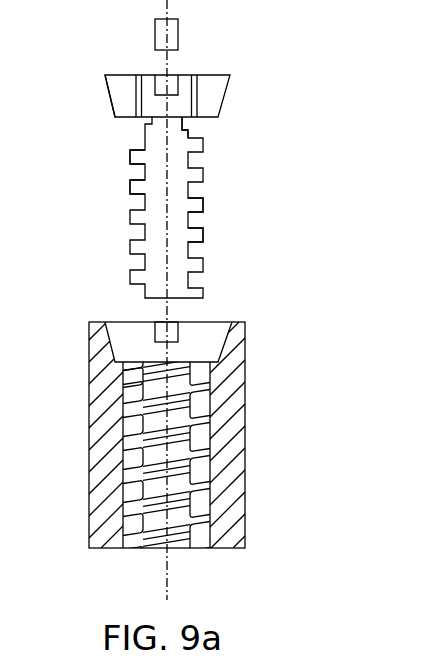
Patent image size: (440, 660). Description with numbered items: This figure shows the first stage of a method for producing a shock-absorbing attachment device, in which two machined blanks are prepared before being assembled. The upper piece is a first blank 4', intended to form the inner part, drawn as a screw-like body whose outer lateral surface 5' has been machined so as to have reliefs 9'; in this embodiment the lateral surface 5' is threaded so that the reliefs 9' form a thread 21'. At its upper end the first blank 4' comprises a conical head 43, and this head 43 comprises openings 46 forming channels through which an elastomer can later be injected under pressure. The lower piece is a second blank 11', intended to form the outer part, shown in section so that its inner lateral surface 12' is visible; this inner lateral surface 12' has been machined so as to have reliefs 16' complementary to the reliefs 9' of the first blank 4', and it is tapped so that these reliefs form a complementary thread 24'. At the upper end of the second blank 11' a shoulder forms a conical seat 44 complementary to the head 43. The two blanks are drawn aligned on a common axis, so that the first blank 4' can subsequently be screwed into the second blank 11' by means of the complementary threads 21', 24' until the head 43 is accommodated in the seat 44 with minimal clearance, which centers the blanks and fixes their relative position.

The first blank 4' is at (183, 59).
The conical head 43 is at (105, 88).
The openings 46 is at (139, 77).
The outer lateral surface 5' is at (139, 207).
The thread 21' is at (234, 121).
The reliefs 9' is at (166, 187).
The second blank 11' is at (220, 418).
The conical seat 44 is at (119, 361).
The inner lateral surface 12' is at (166, 486).
The reliefs 16' is at (171, 446).
The complementary thread 24' is at (89, 375).